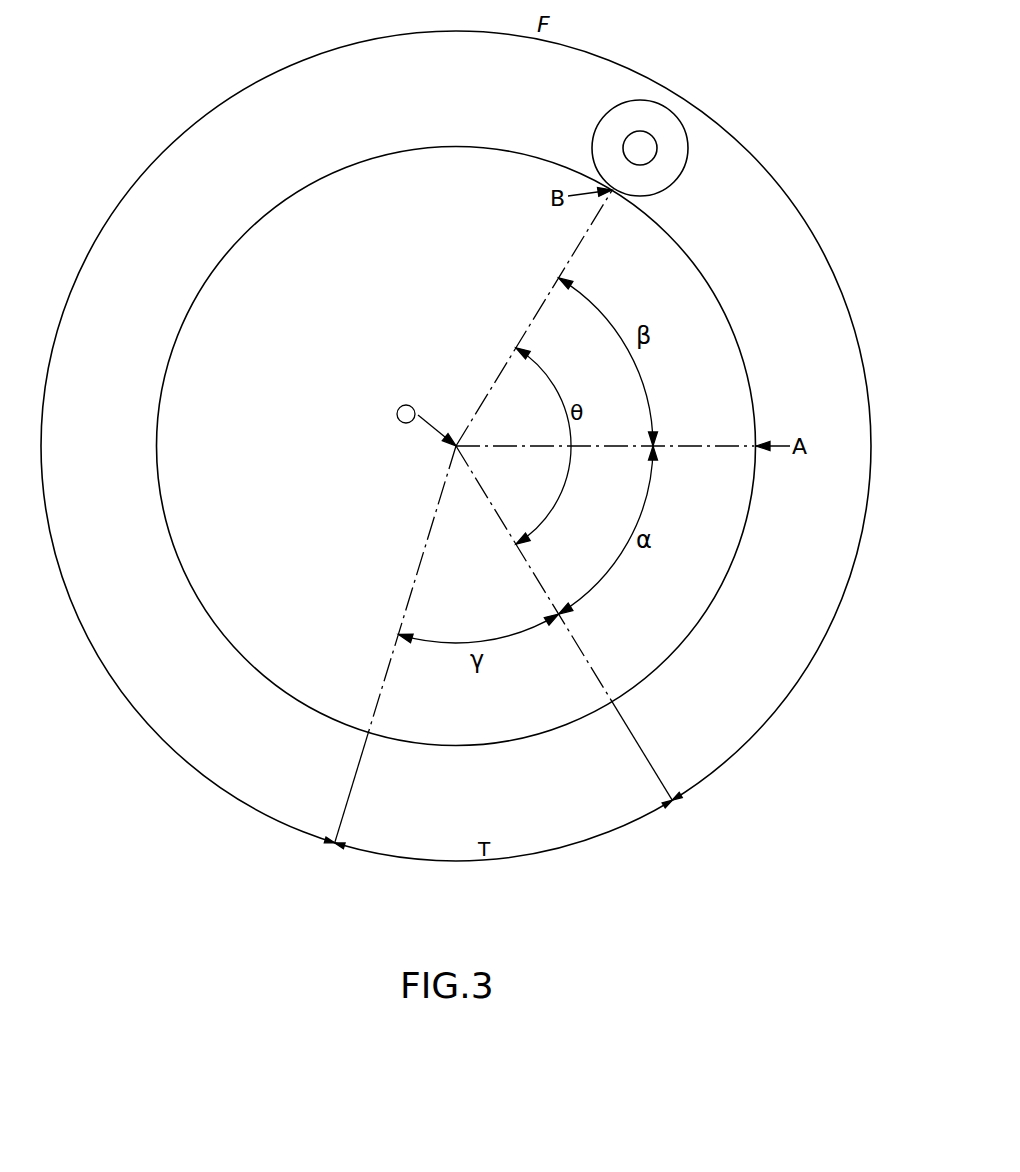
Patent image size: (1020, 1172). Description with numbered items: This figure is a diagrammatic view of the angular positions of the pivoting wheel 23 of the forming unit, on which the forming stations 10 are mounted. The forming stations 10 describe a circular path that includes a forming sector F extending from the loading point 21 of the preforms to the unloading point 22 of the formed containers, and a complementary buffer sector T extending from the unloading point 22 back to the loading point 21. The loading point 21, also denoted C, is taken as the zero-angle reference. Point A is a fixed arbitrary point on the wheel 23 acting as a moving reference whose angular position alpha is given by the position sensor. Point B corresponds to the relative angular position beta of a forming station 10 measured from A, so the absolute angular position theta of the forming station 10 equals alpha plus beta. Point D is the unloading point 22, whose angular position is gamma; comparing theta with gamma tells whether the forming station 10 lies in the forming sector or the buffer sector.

The forming station 10 is at (674, 187).
The loading point 21 is at (615, 703).
The unloading point 22 is at (367, 734).
The pivoting wheel 23 is at (290, 193).